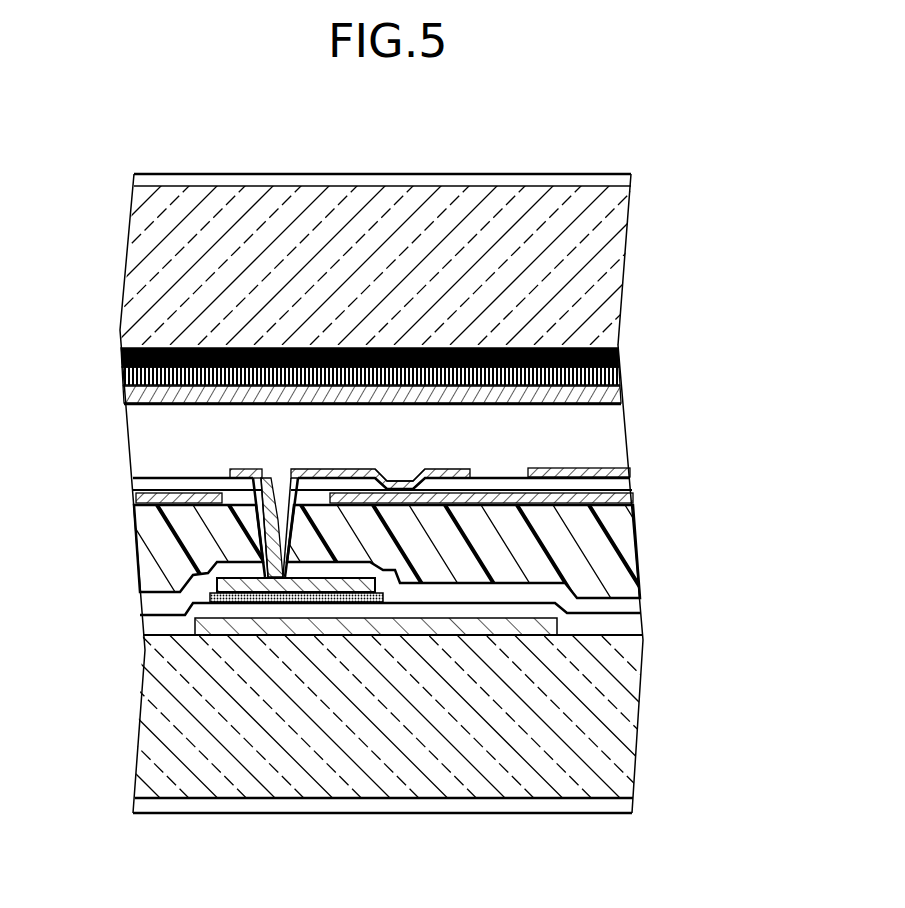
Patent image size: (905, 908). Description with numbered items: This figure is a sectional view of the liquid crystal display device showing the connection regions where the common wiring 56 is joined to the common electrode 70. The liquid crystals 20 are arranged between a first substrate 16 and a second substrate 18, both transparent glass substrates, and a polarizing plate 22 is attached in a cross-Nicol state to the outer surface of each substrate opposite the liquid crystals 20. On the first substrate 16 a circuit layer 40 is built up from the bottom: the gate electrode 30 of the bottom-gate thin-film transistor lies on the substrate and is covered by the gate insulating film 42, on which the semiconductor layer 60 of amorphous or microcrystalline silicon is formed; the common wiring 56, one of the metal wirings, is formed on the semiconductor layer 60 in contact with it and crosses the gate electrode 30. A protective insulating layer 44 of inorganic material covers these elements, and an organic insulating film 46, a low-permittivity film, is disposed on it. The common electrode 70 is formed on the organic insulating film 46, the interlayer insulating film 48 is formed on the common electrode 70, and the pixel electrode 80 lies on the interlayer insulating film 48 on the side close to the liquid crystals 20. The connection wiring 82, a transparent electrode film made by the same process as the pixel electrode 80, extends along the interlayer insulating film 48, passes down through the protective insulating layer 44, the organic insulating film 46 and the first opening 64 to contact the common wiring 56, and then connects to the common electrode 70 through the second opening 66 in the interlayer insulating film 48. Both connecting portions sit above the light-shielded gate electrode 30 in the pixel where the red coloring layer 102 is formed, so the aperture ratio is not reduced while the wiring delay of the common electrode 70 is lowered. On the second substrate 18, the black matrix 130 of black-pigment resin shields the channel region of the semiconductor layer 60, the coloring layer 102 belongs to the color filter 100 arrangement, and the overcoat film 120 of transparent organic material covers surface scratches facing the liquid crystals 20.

The first substrate 16 is at (172, 760).
The second substrate 18 is at (420, 215).
The liquid crystals 20 is at (607, 432).
The polarizing plate 22 is at (292, 183).
The gate electrode 30 is at (241, 630).
The circuit layer 40 is at (440, 736).
The gate insulating film 42 is at (456, 606).
The protective insulating layer 44 is at (546, 594).
The organic insulating film 46 is at (618, 550).
The interlayer insulating film 48 is at (622, 487).
The common wiring 56 is at (308, 582).
The semiconductor layer 60 is at (363, 600).
The first opening 64 is at (268, 480).
The second opening 66 is at (395, 472).
The common electrode 70 is at (147, 498).
The pixel electrode 80 is at (613, 462).
The connection wiring 82 is at (317, 469).
The color filter layer 100 is at (455, 366).
The red coloring layer 102 is at (608, 375).
The overcoat film 120 is at (606, 398).
The black matrix 130 is at (124, 358).